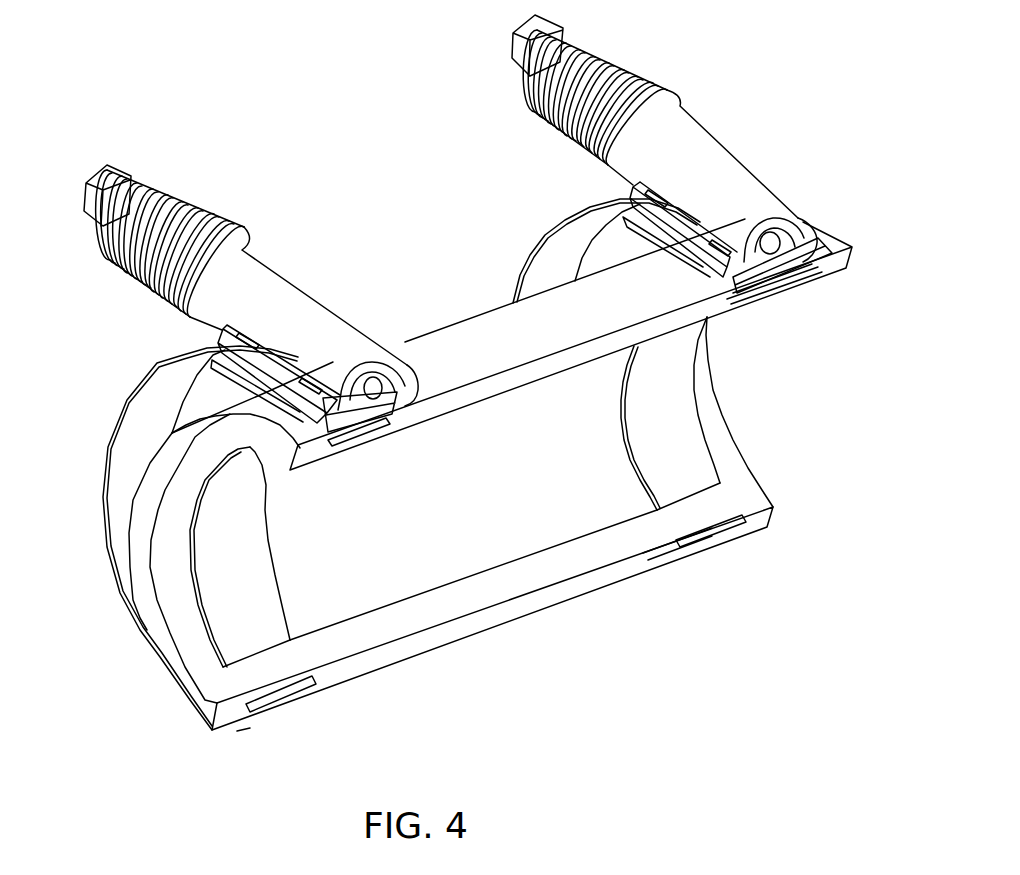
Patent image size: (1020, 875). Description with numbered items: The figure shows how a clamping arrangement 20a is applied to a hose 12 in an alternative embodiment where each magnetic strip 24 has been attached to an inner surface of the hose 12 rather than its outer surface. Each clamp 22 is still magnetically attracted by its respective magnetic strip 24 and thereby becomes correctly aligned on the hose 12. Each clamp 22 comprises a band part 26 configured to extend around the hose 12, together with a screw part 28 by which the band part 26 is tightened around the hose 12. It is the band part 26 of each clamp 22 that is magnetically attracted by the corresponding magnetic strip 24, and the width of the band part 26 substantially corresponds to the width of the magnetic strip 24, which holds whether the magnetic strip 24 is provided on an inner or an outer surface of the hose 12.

The clamping arrangement 20a is at (140, 50).
The hose 12 is at (468, 338).
The clamp 22 is at (245, 213).
The magnetic strip 24 is at (222, 600).
The band part 26 is at (148, 417).
The screw part 28 is at (96, 207).